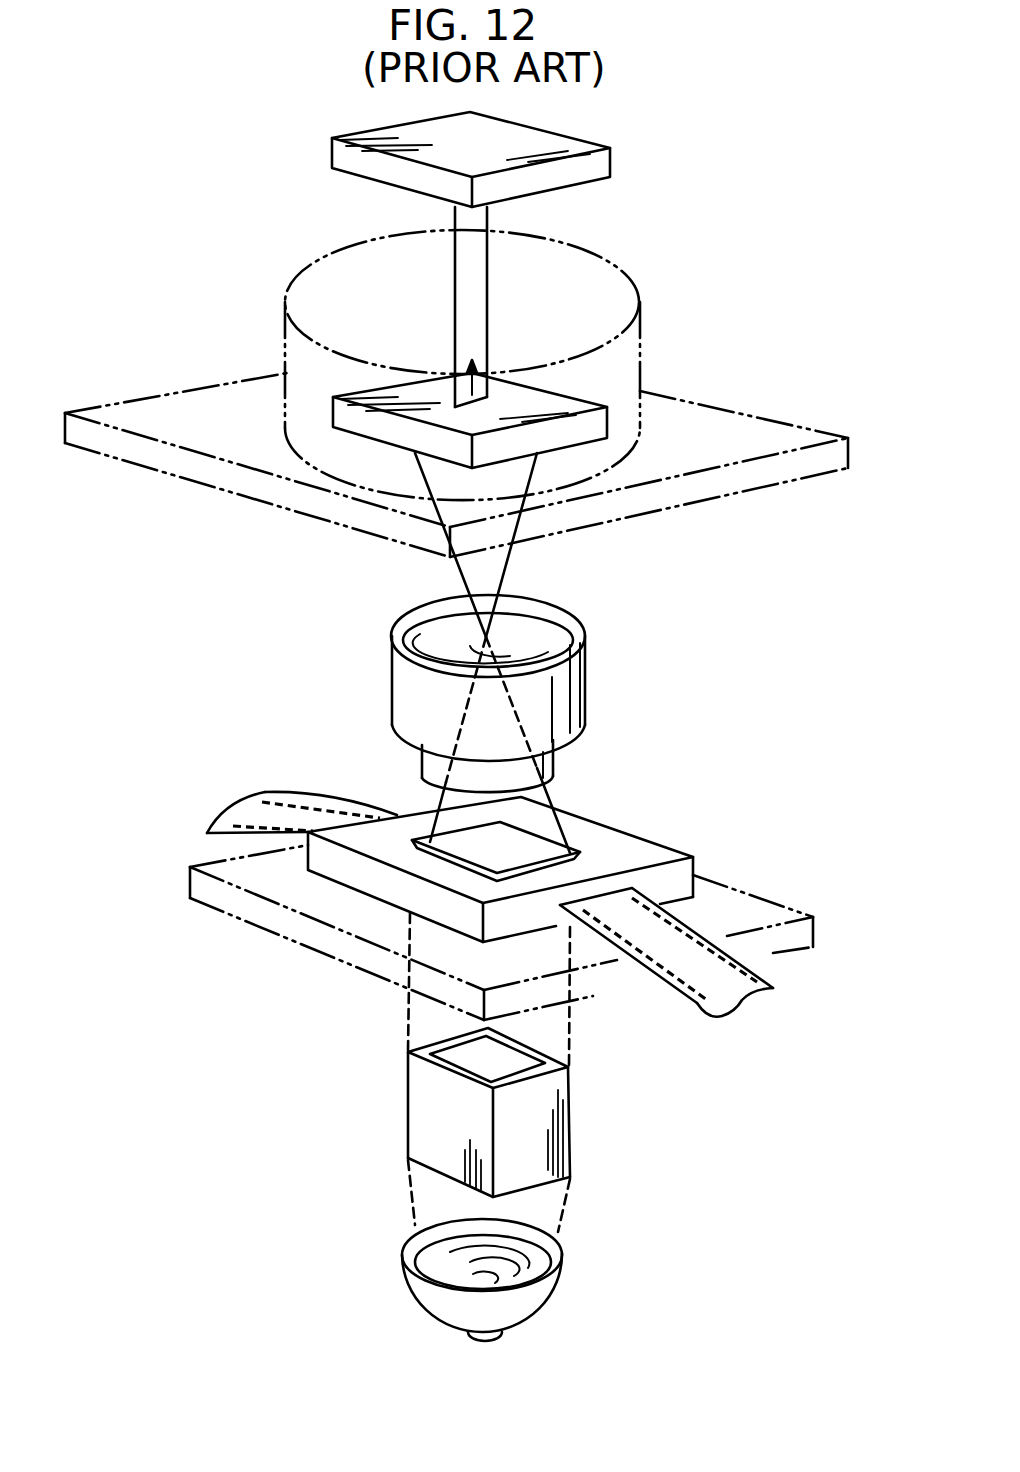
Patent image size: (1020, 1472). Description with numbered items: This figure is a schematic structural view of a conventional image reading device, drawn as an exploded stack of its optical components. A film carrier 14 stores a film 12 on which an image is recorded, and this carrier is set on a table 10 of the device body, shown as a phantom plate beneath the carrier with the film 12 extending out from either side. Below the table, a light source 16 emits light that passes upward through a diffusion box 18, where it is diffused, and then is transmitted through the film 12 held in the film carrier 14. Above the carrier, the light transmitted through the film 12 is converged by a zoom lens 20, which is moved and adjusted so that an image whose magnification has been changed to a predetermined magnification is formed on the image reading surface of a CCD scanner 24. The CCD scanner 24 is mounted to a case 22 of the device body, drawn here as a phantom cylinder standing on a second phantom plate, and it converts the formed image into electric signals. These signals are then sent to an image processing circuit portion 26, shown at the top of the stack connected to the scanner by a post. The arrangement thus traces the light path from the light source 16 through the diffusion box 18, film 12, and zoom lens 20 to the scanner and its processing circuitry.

The table 10 is at (213, 867).
The film 12 is at (737, 990).
The film carrier 14 is at (607, 823).
The light source 16 is at (557, 1289).
The diffusion box 18 is at (572, 1135).
The zoom lens 20 is at (587, 677).
The case 22 is at (638, 323).
The CCD scanner 24 is at (597, 425).
The image processing circuit portion 26 is at (552, 140).